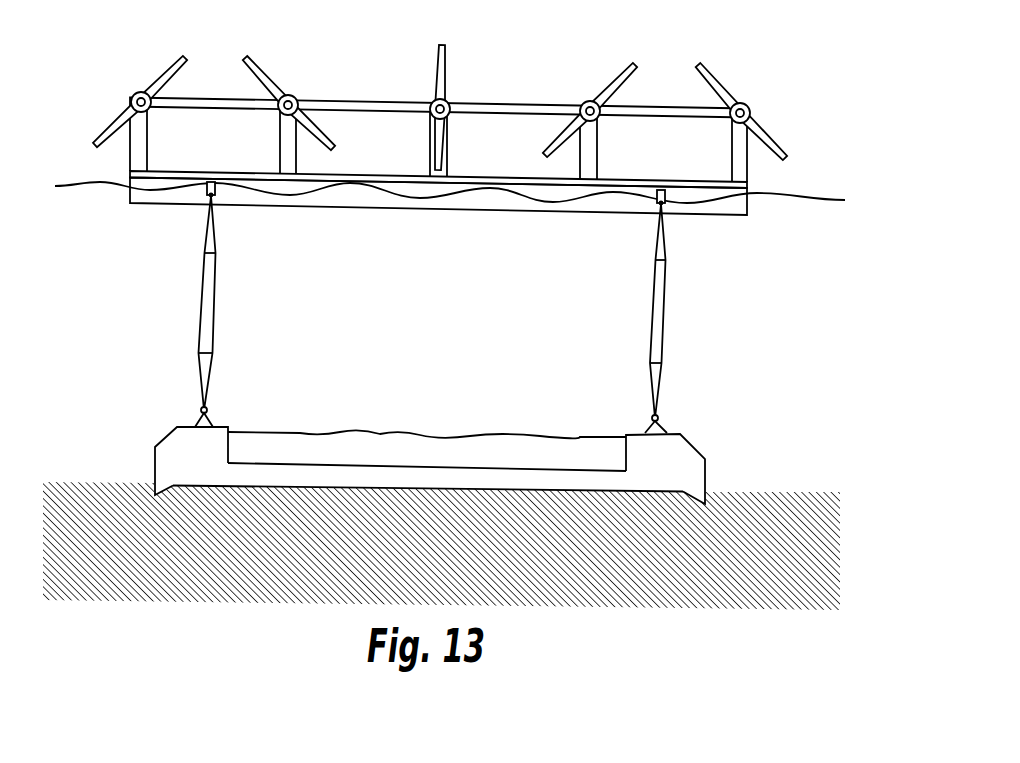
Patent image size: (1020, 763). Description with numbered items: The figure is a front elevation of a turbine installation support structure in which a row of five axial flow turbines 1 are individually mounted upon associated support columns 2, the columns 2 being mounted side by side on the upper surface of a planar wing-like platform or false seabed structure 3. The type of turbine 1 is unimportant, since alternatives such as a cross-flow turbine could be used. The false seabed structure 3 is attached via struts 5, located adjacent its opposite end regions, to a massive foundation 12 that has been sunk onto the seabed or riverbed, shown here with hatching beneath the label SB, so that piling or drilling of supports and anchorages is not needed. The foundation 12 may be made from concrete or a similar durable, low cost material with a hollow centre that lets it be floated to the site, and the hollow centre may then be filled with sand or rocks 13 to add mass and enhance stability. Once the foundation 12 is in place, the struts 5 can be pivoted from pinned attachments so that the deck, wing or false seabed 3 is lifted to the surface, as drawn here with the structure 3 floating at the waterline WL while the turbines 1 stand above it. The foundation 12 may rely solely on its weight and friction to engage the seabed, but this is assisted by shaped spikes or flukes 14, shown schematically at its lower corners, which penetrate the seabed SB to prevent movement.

The axial flow turbine 1 is at (157, 82).
The support column 2 is at (140, 142).
The planar wing-like platform or false seabed structure 3 is at (153, 198).
The strut 5 is at (208, 298).
The massive foundation 12 is at (173, 443).
The sand or rocks 13 is at (380, 445).
The shaped spikes or flukes 14 is at (697, 495).
The seabed SB is at (90, 498).
The waterline WL is at (820, 205).